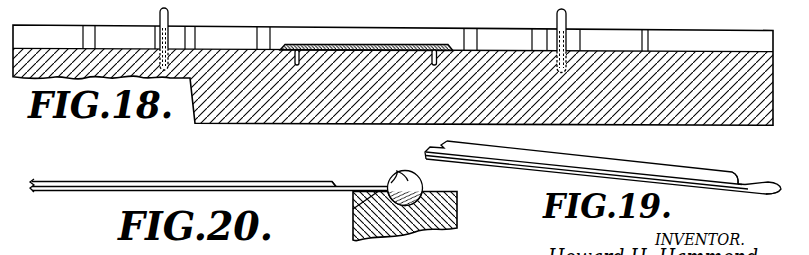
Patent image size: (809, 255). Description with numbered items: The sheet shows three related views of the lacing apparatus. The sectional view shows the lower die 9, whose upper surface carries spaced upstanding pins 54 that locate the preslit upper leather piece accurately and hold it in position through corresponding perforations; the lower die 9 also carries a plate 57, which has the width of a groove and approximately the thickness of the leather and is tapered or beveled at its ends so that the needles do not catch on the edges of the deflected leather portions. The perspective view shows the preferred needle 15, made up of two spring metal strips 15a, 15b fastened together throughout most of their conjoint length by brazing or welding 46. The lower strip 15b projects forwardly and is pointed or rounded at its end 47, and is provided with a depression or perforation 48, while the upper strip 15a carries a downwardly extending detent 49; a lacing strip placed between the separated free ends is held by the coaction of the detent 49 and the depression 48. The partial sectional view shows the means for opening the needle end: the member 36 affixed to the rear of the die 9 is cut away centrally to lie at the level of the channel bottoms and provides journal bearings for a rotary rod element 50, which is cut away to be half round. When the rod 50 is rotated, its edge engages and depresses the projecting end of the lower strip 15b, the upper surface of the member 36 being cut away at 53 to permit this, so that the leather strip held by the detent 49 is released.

In FIG. 18, the lower die 9 is at (249, 126).
In FIG. 18, the upstanding pins 54 is at (169, 14).
In FIG. 18, the plate 57 is at (338, 44).
In FIG. 20, the needle 15 is at (210, 183).
In FIG. 20, the upper strip 15a is at (259, 182).
In FIG. 19, the upper strip 15a is at (575, 155).
In FIG. 20, the lower strip 15b is at (250, 192).
In FIG. 19, the lower strip 15b is at (551, 173).
In FIG. 20, the detent 49 is at (332, 191).
In FIG. 19, the detent 49 is at (736, 181).
In FIG. 20, the rotary rod element 50 is at (398, 172).
In FIG. 20, the cut-away 53 is at (356, 206).
In FIG. 20, the member 36 is at (458, 224).
In FIG. 19, the brazing or welding 46 is at (478, 157).
In FIG. 19, the pointed or rounded end 47 is at (771, 195).
In FIG. 19, the depression or perforation 48 is at (739, 181).